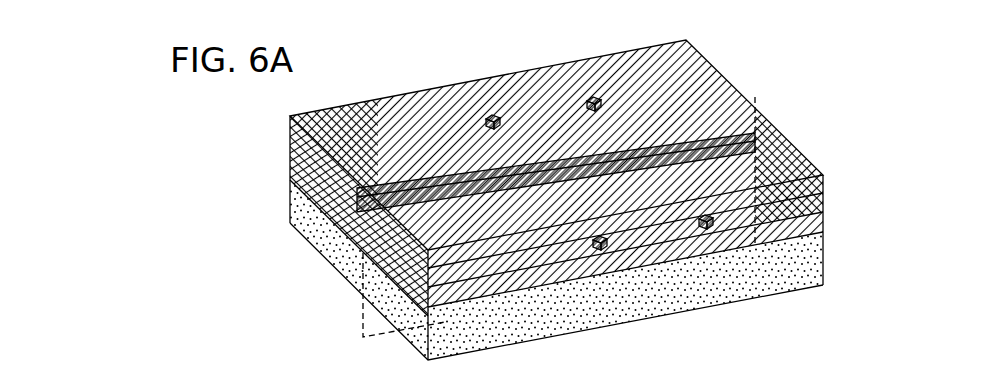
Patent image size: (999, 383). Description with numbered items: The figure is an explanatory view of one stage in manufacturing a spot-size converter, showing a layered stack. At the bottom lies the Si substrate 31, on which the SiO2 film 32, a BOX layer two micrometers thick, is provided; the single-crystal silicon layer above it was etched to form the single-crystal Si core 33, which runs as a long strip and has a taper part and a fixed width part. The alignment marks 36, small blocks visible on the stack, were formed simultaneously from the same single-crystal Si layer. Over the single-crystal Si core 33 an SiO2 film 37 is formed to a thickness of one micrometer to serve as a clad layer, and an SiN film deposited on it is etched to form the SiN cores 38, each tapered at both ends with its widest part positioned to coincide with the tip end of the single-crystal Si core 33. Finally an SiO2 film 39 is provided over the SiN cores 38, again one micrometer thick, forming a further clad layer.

The Si substrate 31 is at (828, 254).
The SiO2 film 32 is at (826, 229).
The single-crystal Si core 33 is at (780, 135).
The alignment marks 36 is at (605, 256).
The SiO2 film 37 is at (826, 205).
The SiN cores 38 is at (318, 208).
The SiO2 film 39 is at (826, 181).